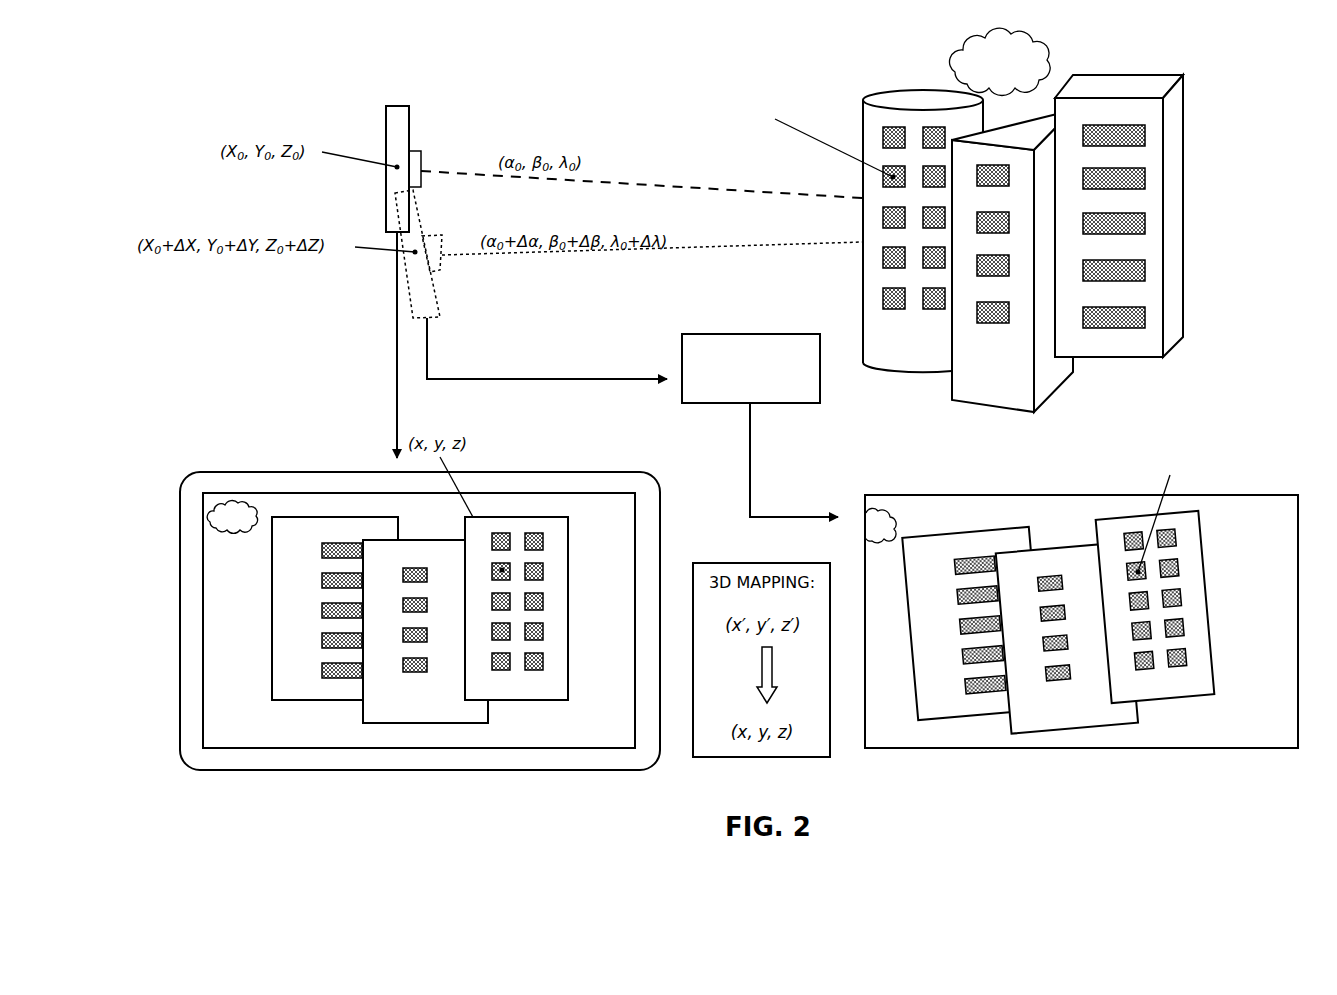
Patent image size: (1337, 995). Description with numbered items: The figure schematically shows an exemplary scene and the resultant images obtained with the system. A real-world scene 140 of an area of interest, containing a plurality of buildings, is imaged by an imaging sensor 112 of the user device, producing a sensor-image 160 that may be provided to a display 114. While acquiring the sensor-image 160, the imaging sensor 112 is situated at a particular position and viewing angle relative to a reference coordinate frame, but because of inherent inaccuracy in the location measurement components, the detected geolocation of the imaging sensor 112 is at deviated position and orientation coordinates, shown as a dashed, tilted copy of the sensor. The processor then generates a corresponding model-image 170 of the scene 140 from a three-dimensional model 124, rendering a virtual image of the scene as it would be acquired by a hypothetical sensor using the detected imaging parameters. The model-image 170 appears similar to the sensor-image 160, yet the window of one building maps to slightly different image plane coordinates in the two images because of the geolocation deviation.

The imaging sensor 112 is at (386, 125).
The display 114 is at (293, 471).
The 3D model 124 is at (682, 356).
The real-world scene 140 is at (939, 236).
The sensor-image 160 is at (411, 598).
The model-image 170 is at (1068, 599).